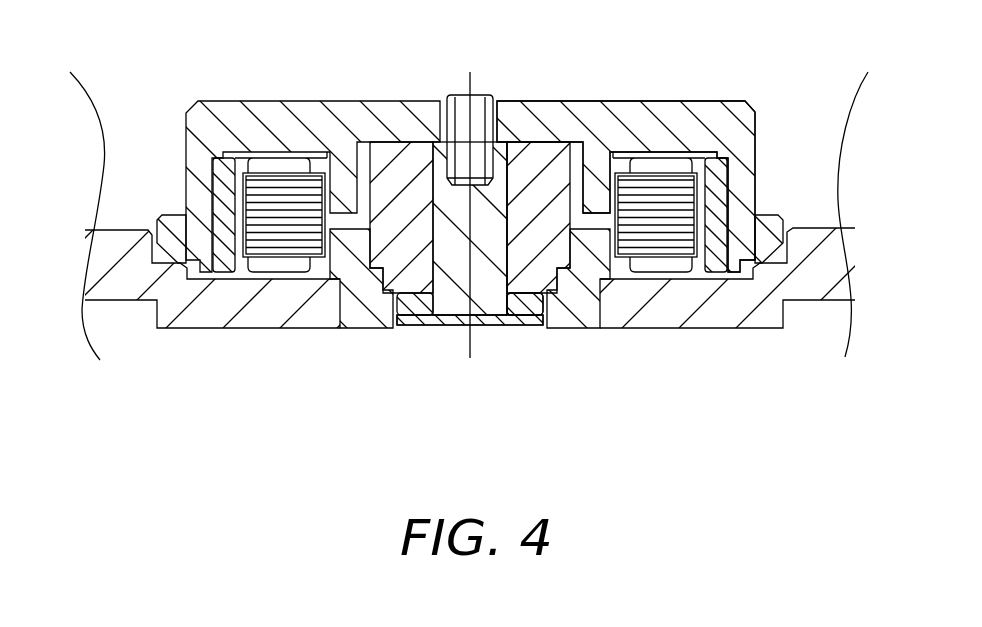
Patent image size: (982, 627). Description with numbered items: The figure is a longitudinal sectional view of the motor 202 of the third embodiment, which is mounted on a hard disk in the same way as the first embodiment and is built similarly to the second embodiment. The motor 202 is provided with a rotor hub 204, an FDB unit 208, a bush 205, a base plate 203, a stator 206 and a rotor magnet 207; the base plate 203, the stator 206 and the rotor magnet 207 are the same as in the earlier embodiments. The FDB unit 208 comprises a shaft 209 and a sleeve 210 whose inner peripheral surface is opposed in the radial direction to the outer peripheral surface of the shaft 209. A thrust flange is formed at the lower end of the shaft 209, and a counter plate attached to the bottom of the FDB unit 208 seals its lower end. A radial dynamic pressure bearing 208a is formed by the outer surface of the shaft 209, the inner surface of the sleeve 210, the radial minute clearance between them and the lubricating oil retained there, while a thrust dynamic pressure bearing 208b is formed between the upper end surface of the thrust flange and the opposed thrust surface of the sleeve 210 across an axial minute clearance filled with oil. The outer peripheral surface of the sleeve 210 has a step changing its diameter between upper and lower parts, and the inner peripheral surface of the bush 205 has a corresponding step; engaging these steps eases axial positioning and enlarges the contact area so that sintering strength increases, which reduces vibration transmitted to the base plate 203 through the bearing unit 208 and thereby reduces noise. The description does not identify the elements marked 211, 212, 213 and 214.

The motor 202 is at (186, 99).
The base plate 203 is at (130, 273).
The rotor hub 204 is at (772, 158).
The bush 205 is at (357, 273).
The stator 206 is at (272, 213).
The rotor magnet 207 is at (230, 247).
The FDB unit 208 is at (527, 340).
The radial dynamic pressure bearing 208a is at (505, 178).
The thrust dynamic pressure bearing 208b is at (543, 235).
The shaft 209 is at (455, 213).
The sleeve 210 is at (410, 213).
The thrust plate 211 is at (452, 320).
The retaining ring 212 is at (527, 302).
The stopper 213 is at (540, 305).
The side plate 214 is at (767, 237).